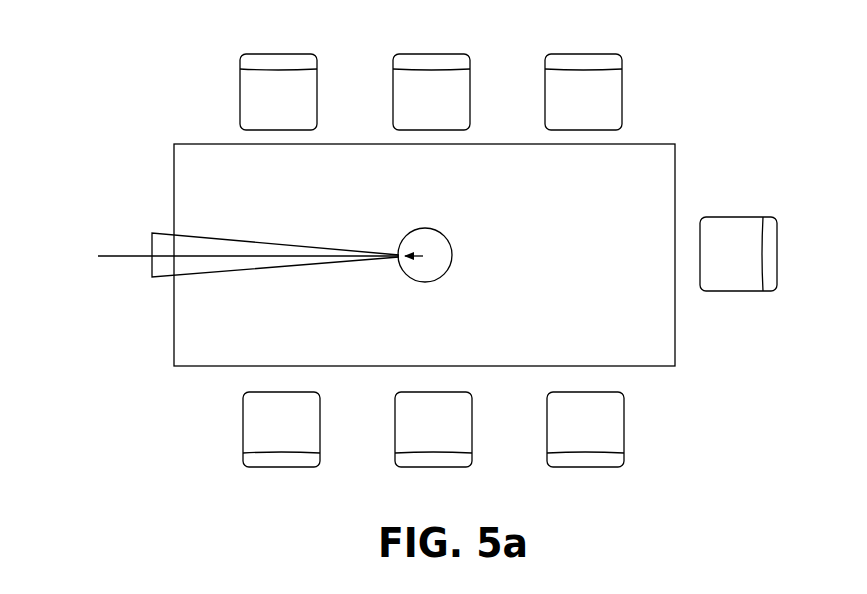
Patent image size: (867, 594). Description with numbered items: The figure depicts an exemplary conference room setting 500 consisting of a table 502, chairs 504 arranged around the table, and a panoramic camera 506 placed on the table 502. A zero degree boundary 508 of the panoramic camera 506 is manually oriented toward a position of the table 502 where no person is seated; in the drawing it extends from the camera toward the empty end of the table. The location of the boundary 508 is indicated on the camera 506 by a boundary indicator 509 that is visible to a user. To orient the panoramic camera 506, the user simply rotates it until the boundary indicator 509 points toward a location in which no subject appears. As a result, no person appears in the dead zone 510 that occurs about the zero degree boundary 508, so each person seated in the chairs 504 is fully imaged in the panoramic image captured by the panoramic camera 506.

The conference room setting 500 is at (128, 166).
The table 502 is at (185, 144).
The chairs 504 is at (265, 54).
The panoramic camera 506 is at (428, 290).
The zero degree boundary 508 is at (125, 259).
The boundary indicator 509 is at (421, 253).
The dead zone 510 is at (190, 276).